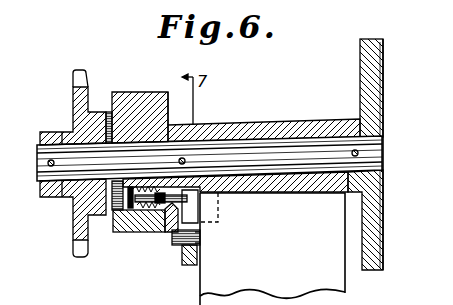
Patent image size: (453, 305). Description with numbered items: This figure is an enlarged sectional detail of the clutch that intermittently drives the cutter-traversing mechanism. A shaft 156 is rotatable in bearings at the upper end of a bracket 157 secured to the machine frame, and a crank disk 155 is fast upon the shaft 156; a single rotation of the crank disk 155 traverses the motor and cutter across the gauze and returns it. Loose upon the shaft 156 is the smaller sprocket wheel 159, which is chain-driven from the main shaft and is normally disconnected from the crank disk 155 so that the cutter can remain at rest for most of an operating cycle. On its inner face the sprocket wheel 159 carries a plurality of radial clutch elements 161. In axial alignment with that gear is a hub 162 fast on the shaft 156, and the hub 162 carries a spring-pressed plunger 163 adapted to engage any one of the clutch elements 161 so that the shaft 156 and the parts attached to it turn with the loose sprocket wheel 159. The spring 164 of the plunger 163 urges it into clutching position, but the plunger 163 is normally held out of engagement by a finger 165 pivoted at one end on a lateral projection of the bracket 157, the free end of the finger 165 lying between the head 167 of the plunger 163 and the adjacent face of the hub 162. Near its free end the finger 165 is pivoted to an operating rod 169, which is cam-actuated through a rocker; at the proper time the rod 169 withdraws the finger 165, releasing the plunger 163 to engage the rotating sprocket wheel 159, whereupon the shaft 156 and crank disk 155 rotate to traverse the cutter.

The crank disk 155 is at (375, 58).
The shaft 156 is at (285, 150).
The bracket 157 is at (334, 279).
The sprocket wheel 159 is at (77, 96).
The clutch elements 161 is at (108, 113).
The hub 162 is at (148, 93).
The plunger 163 is at (163, 206).
The spring 164 is at (132, 212).
The finger 165 is at (176, 248).
The head 167 is at (186, 200).
The operating rod 169 is at (190, 267).